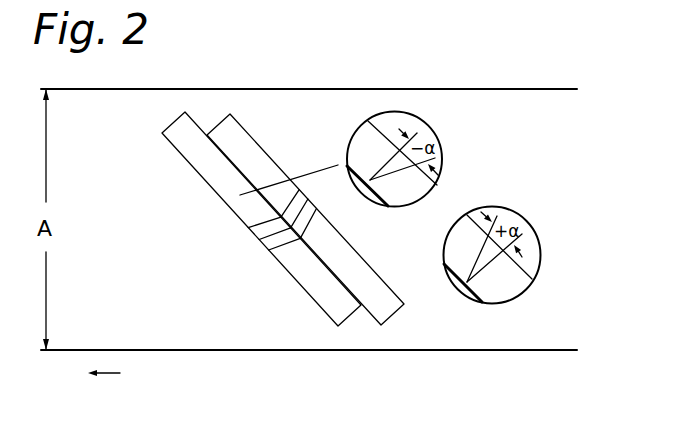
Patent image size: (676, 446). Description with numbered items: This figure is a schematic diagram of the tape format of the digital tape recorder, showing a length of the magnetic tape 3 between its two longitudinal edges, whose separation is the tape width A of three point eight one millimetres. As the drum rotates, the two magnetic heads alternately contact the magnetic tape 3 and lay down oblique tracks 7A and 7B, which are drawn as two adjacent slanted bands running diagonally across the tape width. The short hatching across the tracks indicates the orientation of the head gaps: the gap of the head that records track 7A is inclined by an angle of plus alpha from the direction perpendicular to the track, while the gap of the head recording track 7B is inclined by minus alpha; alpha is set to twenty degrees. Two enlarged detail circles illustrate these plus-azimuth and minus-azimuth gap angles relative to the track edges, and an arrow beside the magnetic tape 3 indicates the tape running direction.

The magnetic tape 3 is at (188, 340).
The oblique track 7A is at (214, 183).
The oblique track 7B is at (258, 144).